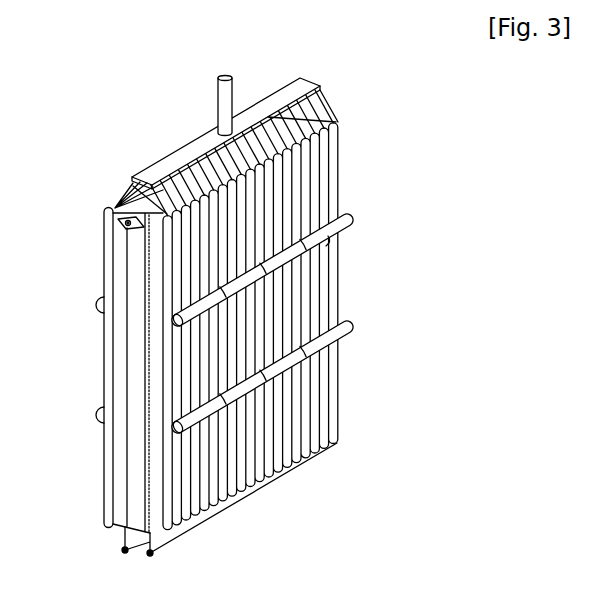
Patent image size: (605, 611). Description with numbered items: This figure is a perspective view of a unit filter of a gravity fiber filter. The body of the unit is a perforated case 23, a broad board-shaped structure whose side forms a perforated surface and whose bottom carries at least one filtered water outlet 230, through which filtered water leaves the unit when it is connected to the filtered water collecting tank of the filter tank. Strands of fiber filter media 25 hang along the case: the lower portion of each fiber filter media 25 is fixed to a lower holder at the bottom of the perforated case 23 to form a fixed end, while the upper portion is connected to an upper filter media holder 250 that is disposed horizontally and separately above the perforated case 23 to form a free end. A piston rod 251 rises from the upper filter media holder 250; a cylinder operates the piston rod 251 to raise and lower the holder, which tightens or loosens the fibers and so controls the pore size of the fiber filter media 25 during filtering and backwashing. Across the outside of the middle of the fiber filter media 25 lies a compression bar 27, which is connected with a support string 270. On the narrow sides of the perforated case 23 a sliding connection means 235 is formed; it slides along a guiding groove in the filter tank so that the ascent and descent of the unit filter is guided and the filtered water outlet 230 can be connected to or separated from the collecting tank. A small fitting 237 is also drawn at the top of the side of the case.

The perforated case 23 is at (124, 277).
The fiber filter media 25 is at (335, 166).
The compression bar 27 is at (342, 222).
The filtered water outlet 230 is at (126, 543).
The sliding connection means 235 is at (138, 353).
The connection port 237 is at (113, 212).
The upper filter media holder 250 is at (178, 157).
The piston rod 251 is at (223, 104).
The support string 270 is at (320, 247).